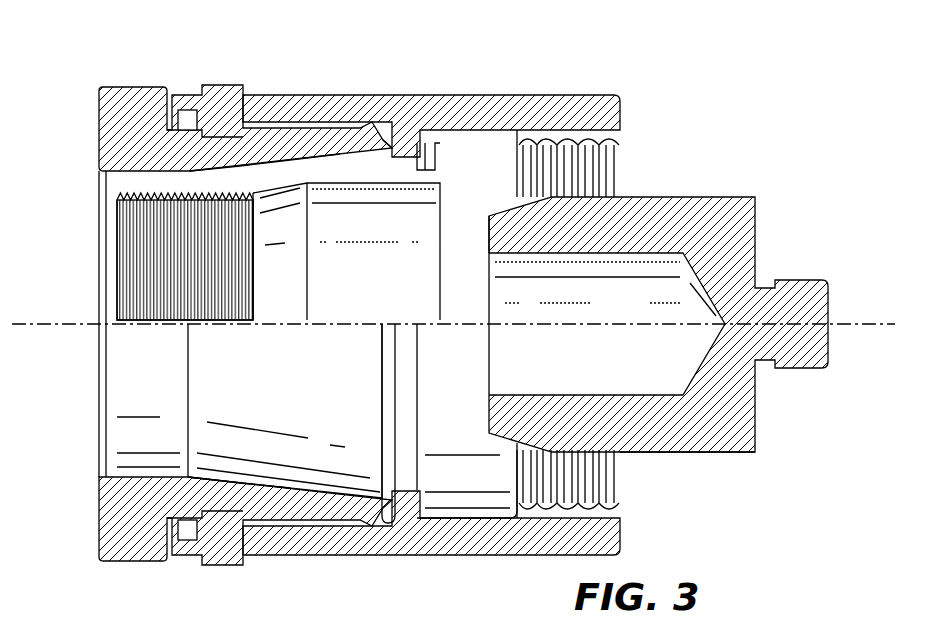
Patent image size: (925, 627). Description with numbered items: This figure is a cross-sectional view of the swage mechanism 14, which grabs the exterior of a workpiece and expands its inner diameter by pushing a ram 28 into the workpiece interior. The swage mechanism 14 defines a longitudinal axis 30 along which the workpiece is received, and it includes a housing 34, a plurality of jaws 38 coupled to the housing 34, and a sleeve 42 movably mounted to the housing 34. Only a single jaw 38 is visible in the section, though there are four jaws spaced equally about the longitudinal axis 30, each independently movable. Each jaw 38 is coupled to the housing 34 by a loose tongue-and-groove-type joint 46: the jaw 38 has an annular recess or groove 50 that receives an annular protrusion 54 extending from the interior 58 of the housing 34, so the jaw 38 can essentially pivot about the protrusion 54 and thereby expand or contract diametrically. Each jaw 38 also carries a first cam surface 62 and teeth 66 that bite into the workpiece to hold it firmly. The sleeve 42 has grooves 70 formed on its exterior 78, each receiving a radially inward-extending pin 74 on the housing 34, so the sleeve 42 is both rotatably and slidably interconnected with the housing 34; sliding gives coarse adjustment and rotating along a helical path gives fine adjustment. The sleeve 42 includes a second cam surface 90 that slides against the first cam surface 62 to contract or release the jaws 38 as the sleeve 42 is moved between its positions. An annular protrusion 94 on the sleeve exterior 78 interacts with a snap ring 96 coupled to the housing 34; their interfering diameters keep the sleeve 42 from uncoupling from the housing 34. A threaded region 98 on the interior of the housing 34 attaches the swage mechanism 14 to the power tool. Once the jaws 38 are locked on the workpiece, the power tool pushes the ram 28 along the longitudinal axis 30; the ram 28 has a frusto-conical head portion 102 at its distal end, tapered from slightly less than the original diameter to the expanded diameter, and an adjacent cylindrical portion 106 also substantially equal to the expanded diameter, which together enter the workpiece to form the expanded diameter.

The swage mechanism 14 is at (647, 46).
The ram 28 is at (715, 197).
The longitudinal axis 30 is at (843, 320).
The housing 34 is at (285, 95).
The jaw 38 is at (284, 292).
The sleeve 42 is at (126, 543).
The tongue-and-groove-type joint 46 is at (452, 153).
The annular recess or groove 50 is at (425, 160).
The annular protrusion 54 is at (395, 148).
The interior of the housing 58 is at (330, 140).
The first cam surface 62 is at (140, 180).
The teeth 66 is at (150, 268).
The groove 70 is at (190, 152).
The pin 74 is at (220, 85).
The exterior of the sleeve 78 is at (330, 515).
The second cam surface 90 is at (268, 168).
The annular protrusion 94 is at (387, 527).
The snap ring 96 is at (186, 540).
The threaded region 98 is at (592, 162).
The frusto-conical head portion 102 is at (503, 210).
The cylindrical portion 106 is at (682, 452).